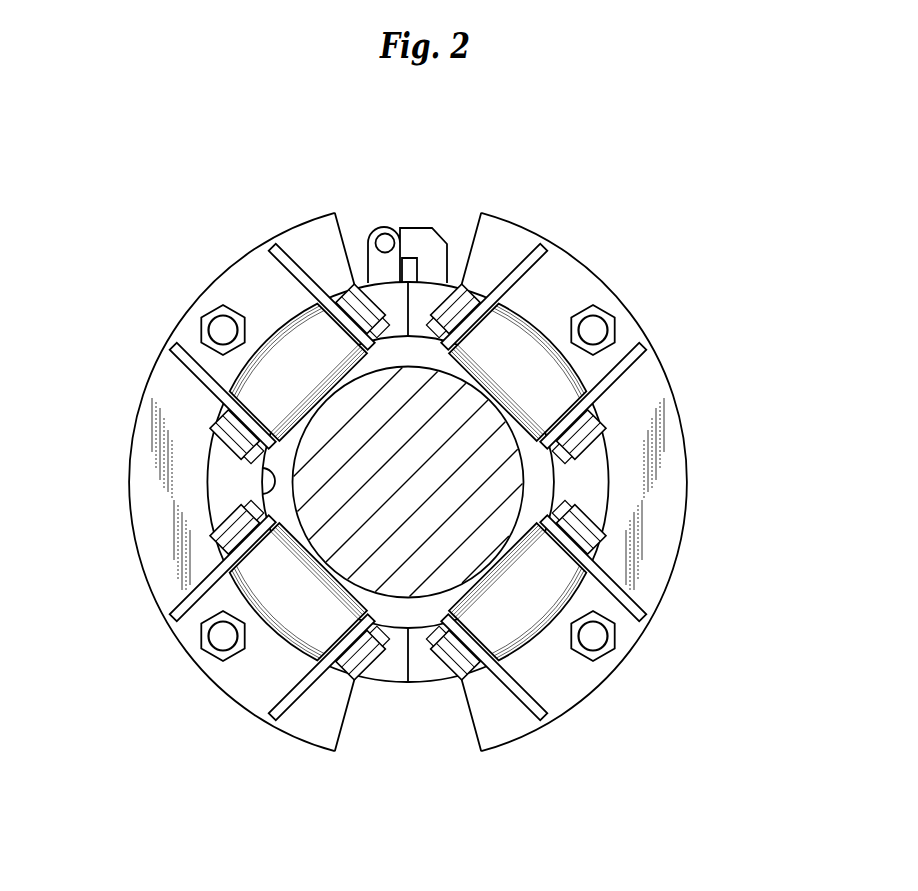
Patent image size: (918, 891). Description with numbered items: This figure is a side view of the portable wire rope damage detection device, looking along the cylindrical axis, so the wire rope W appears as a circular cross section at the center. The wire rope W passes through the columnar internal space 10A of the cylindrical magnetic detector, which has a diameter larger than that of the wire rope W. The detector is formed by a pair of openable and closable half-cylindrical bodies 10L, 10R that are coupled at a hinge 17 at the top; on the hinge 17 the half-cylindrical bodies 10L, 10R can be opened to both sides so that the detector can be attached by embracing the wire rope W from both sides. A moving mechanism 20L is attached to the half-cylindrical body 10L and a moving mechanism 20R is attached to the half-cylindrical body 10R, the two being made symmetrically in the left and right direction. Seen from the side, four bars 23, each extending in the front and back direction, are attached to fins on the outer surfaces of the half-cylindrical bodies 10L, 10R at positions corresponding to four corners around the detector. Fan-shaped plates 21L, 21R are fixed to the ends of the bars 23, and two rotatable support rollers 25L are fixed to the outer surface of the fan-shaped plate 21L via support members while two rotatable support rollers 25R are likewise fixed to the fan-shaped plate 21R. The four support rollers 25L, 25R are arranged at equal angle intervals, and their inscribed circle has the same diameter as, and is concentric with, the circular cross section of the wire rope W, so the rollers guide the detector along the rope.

The half-cylindrical body 10L is at (389, 666).
The half-cylindrical body 10R is at (428, 667).
The internal space 10A is at (268, 482).
The hinge 17 is at (418, 228).
The moving mechanism 20L is at (145, 382).
The moving mechanism 20R is at (676, 384).
The fan-shaped plate 21L is at (147, 507).
The fan-shaped plate 21R is at (673, 463).
The bar 23 is at (220, 328).
The support roller 25L is at (303, 350).
The support roller 25R is at (516, 354).
The wire rope W is at (507, 480).